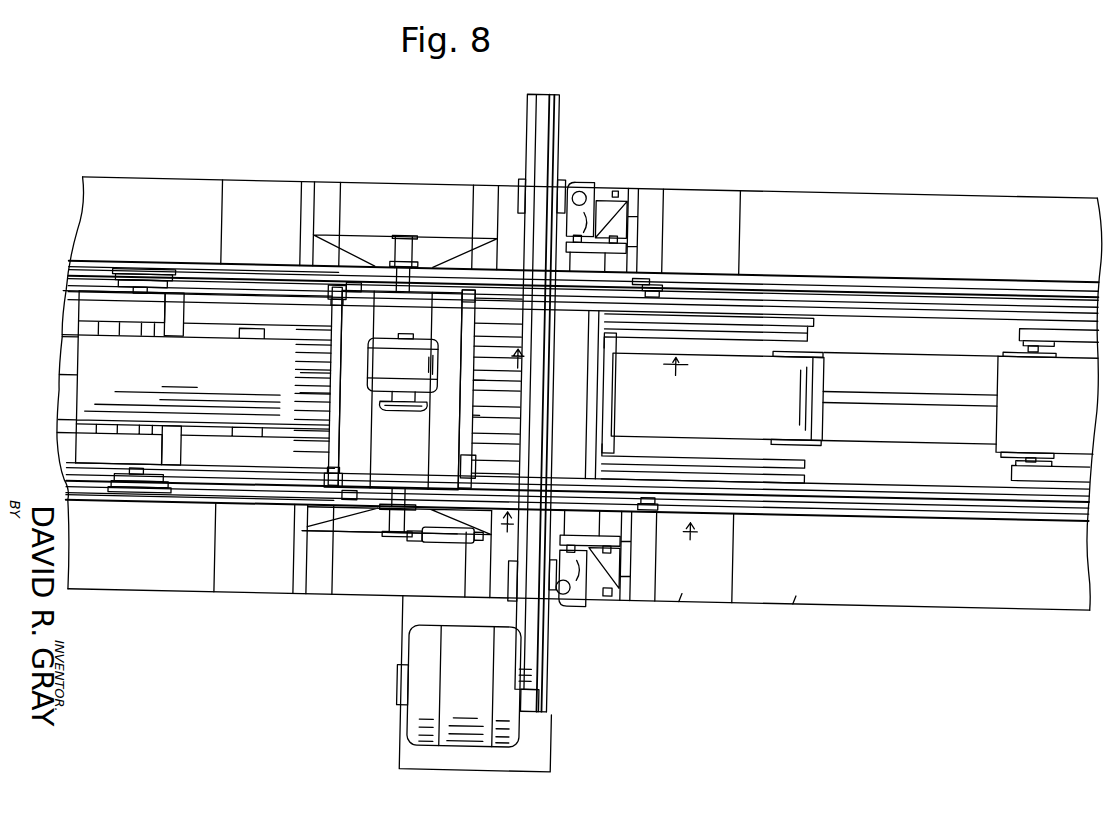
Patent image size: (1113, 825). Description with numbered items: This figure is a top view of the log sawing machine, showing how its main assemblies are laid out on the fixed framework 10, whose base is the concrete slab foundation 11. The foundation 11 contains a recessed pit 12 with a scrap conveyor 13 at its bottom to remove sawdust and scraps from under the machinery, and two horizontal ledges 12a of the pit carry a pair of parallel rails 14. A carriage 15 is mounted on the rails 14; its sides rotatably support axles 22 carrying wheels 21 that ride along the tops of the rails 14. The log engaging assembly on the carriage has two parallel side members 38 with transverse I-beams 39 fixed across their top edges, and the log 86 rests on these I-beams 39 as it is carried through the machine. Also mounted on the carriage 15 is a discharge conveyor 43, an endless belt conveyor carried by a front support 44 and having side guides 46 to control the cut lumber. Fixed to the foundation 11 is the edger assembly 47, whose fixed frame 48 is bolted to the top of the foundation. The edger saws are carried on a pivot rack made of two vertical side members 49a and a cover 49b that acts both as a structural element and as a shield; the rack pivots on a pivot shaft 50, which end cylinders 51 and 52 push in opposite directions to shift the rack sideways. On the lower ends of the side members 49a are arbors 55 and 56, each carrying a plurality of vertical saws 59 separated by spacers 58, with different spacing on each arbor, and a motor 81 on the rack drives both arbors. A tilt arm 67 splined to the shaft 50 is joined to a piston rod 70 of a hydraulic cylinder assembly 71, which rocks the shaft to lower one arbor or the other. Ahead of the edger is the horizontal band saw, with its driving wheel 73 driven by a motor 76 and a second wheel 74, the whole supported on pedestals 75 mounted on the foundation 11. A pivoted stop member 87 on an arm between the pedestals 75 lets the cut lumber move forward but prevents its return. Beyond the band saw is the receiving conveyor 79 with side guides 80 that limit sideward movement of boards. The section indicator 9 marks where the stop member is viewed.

The section line 9- 9 is at (508, 358).
The fixed framework 10 is at (675, 608).
The concrete slab foundation 11 is at (790, 610).
The recessed pit 12 is at (65, 319).
The horizontal ledges 12a is at (130, 272).
The scrap conveyor 13 is at (922, 385).
The rails 14 is at (97, 283).
The carriage 15 is at (66, 458).
The wheels 21 is at (165, 280).
The axles 22 is at (142, 336).
The side members 38 is at (224, 329).
The transverse I-beams 39 is at (165, 320).
The discharge conveyor 43 is at (722, 397).
The front support 44 is at (800, 317).
The side guides 46 is at (803, 338).
The edger assembly 47 is at (294, 351).
The fixed frame 48 is at (358, 244).
The vertical side members 49a is at (329, 487).
The cover 49b is at (415, 451).
The pivot shaft 50 is at (399, 494).
The end cylinder 51 is at (395, 538).
The end cylinder 52 is at (403, 243).
The arbor 55 is at (479, 474).
The arbor 56 is at (328, 309).
The spacers 58 is at (296, 398).
The vertical saws 59 is at (293, 378).
The tilt arm 67 is at (459, 517).
The piston rod 70 is at (415, 540).
The hydraulic cylinder assembly 71 is at (445, 543).
The driving wheel 73 is at (520, 621).
The rotatable wheel 74 is at (521, 109).
The pedestals 75 is at (596, 204).
The motor 76 is at (483, 656).
The receiving conveyor 79 is at (989, 348).
The side guides 80 is at (1017, 327).
The motor 81 is at (385, 345).
The log 86 is at (132, 376).
The pivoted stop member 87 is at (615, 379).